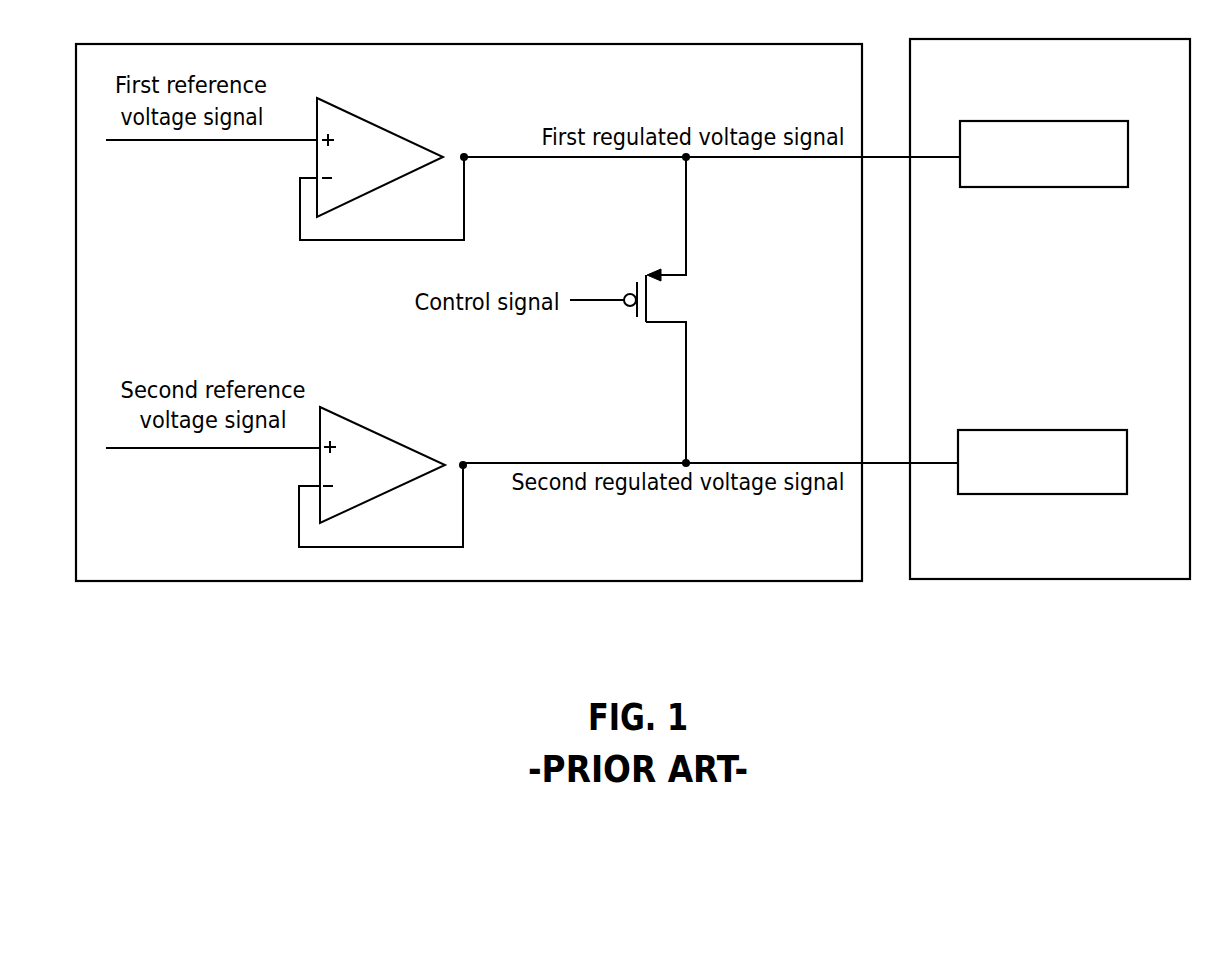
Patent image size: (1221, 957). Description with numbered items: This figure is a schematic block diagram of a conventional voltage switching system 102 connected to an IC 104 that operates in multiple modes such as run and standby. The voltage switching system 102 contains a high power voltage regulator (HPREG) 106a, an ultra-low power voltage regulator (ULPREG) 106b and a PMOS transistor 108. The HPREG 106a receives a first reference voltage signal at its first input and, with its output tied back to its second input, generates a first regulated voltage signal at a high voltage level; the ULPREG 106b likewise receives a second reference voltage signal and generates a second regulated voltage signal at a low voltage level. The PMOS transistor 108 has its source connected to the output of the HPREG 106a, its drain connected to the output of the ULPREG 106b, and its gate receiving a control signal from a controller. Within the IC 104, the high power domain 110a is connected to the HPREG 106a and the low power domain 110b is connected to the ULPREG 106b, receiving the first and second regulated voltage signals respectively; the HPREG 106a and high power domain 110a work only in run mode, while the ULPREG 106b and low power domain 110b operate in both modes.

The voltage switching system 102 is at (468, 581).
The IC 104 is at (1050, 580).
The high power voltage regulator (HPREG) 106a is at (382, 127).
The ultra-low power voltage regulator (ULPREG) 106b is at (382, 432).
The PMOS transistor 108 is at (626, 294).
The high power domain 110a is at (1043, 187).
The low power domain 110b is at (1042, 430).